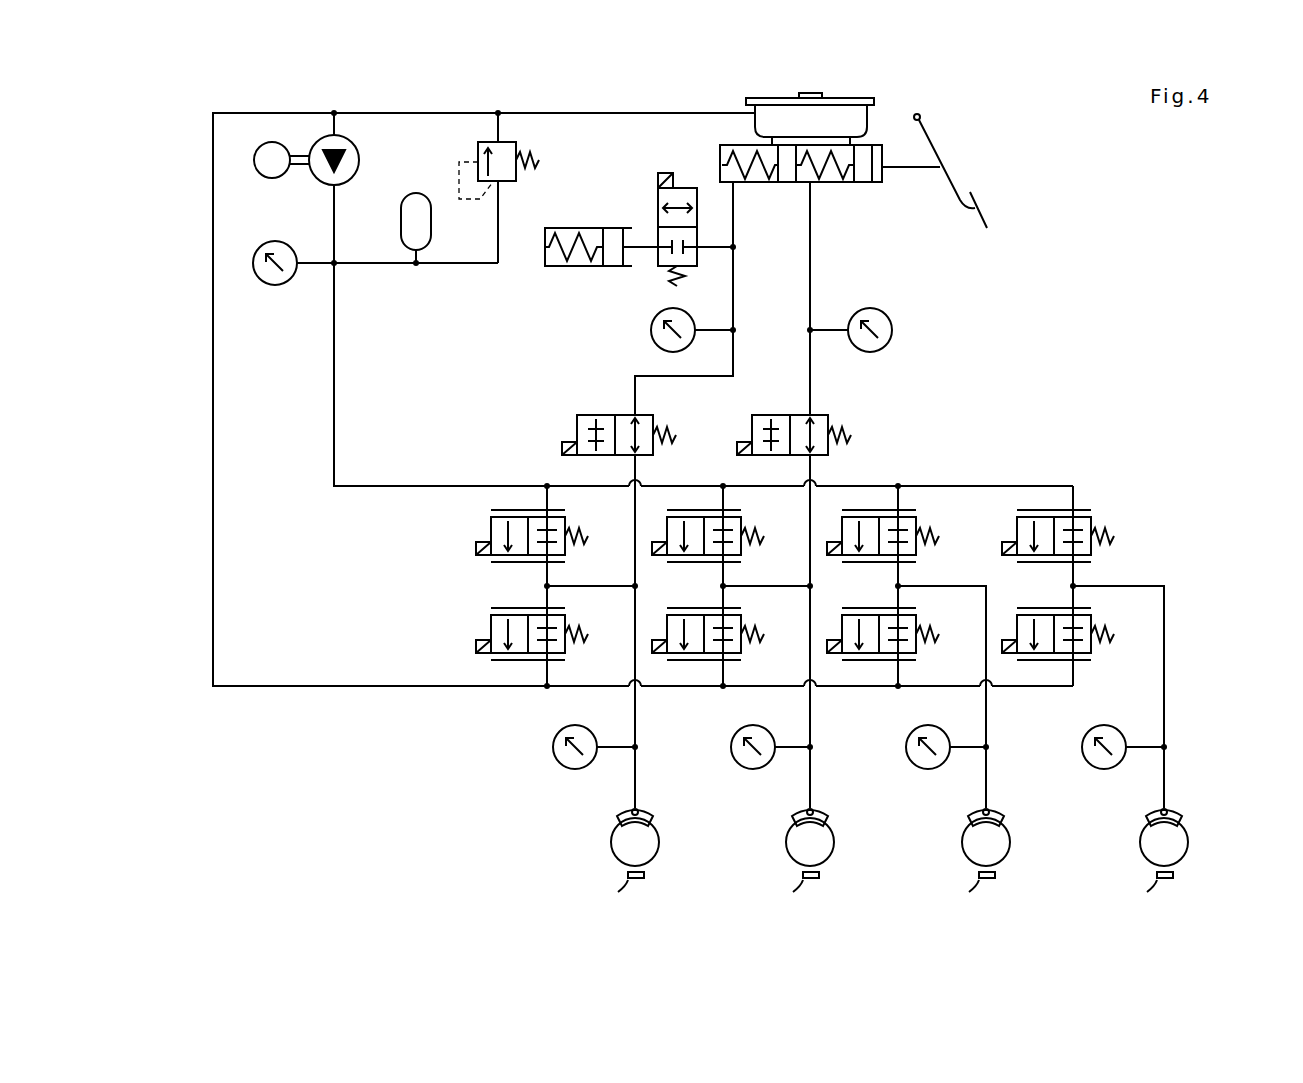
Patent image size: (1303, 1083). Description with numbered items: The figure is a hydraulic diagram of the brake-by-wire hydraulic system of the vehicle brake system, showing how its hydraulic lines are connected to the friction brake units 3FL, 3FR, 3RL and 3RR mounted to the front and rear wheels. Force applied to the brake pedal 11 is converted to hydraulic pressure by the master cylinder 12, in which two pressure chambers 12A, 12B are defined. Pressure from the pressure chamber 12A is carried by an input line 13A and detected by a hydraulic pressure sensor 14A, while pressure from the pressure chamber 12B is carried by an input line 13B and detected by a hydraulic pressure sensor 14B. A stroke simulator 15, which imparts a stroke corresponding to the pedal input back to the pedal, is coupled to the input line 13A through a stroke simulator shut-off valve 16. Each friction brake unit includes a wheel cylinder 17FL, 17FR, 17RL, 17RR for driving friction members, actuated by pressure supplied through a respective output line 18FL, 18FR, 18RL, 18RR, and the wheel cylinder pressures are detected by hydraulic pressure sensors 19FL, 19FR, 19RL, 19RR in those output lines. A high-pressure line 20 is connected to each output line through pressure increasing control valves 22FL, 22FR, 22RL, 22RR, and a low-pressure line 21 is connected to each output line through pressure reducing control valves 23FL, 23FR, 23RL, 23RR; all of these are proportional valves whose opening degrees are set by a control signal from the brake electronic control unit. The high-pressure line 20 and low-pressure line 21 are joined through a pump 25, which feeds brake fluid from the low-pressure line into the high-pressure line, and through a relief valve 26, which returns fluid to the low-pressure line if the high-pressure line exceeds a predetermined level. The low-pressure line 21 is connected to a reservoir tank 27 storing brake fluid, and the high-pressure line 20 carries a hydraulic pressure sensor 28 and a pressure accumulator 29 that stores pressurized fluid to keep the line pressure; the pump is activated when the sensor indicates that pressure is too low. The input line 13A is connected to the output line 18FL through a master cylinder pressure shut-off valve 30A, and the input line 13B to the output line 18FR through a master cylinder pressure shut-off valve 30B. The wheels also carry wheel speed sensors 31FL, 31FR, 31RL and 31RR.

The friction brake unit 3FL is at (618, 813).
The friction brake unit 3FR is at (793, 813).
The friction brake unit 3RL is at (969, 813).
The friction brake unit 3RR is at (1147, 813).
The brake pedal 11 is at (978, 196).
The master cylinder 12 is at (870, 182).
The pressure chamber 12A is at (752, 182).
The pressure chamber 12B is at (830, 182).
The input line 13A is at (735, 285).
The input line 13B is at (812, 285).
The hydraulic pressure sensor 14A is at (651, 330).
The hydraulic pressure sensor 14B is at (892, 330).
The stroke simulator 15 is at (549, 266).
The stroke simulator shut-off valve 16 is at (658, 196).
The wheel cylinder 17FL is at (637, 810).
The wheel cylinder 17FR is at (812, 810).
The wheel cylinder 17RL is at (988, 810).
The wheel cylinder 17RR is at (1166, 810).
The output line 18FL is at (637, 714).
The output line 18FR is at (812, 714).
The output line 18RL is at (988, 714).
The output line 18RR is at (1166, 714).
The hydraulic pressure sensor 19FL is at (553, 748).
The hydraulic pressure sensor 19FR is at (731, 748).
The hydraulic pressure sensor 19RL is at (906, 748).
The hydraulic pressure sensor 19RR is at (1082, 748).
The high-pressure line 20 is at (334, 438).
The low-pressure line 21 is at (213, 438).
The pressure increasing control valve 22FL is at (492, 526).
The pressure increasing control valve 22FR is at (718, 551).
The pressure increasing control valve 22RL is at (893, 551).
The pressure increasing control valve 22RR is at (1068, 551).
The pressure reducing control valve 23FL is at (492, 626).
The pressure reducing control valve 23FR is at (718, 651).
The pressure reducing control valve 23RL is at (893, 651).
The pressure reducing control valve 23RR is at (1068, 651).
The pump 25 is at (330, 180).
The relief valve 26 is at (505, 181).
The reservoir tank 27 is at (868, 116).
The hydraulic pressure sensor 28 is at (276, 287).
The pressure accumulator 29 is at (416, 196).
The master cylinder pressure shut-off valve 30A is at (577, 424).
The master cylinder pressure shut-off valve 30B is at (828, 424).
The wheel speed sensor 31FL is at (619, 894).
The wheel speed sensor 31FR is at (795, 894).
The wheel speed sensor 31RL is at (970, 894).
The wheel speed sensor 31RR is at (1149, 894).